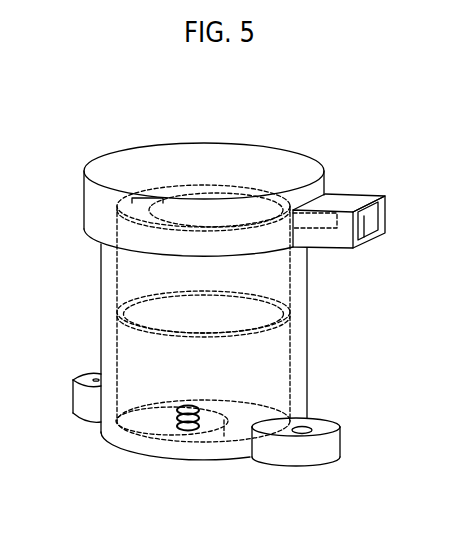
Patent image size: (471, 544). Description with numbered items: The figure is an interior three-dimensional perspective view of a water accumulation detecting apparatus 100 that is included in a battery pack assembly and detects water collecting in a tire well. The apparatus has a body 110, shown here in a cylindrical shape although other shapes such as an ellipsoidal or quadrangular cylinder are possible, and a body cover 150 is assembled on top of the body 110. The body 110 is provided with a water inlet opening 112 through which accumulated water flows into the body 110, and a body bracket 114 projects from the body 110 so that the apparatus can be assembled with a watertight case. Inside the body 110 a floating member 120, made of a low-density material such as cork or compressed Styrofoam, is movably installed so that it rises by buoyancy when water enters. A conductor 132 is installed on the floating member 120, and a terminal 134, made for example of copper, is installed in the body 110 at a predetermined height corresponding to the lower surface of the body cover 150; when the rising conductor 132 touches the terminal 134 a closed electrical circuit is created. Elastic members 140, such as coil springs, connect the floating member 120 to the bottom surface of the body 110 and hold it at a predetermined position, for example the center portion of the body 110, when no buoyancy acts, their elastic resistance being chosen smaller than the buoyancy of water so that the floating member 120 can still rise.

The water accumulation detecting apparatus 100 is at (88, 430).
The body 110 is at (307, 373).
The water inlet opening 112 is at (218, 440).
The body bracket 114 is at (333, 442).
The floating member 120 is at (286, 340).
The conductor 132 is at (183, 307).
The terminal 134 is at (252, 218).
The elastic member 140 is at (186, 430).
The body cover 150 is at (201, 142).